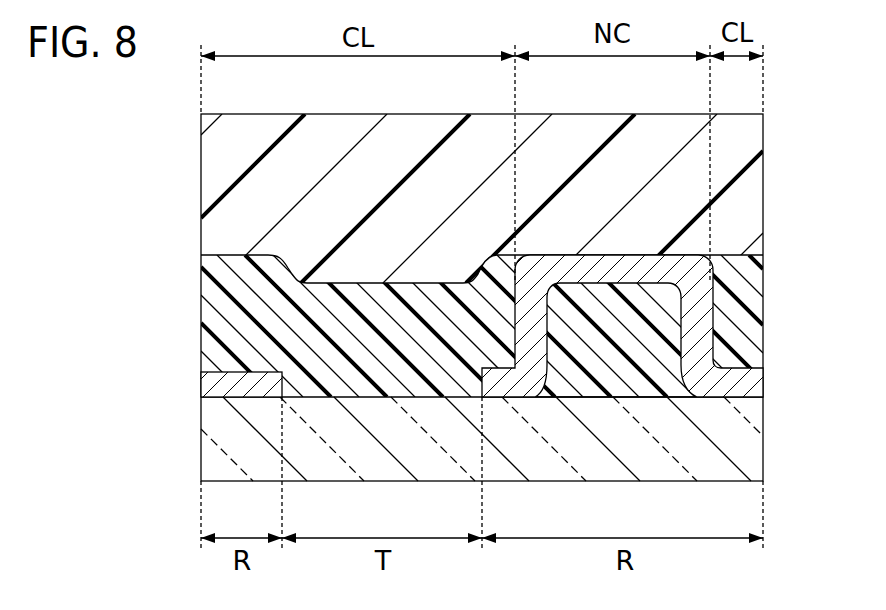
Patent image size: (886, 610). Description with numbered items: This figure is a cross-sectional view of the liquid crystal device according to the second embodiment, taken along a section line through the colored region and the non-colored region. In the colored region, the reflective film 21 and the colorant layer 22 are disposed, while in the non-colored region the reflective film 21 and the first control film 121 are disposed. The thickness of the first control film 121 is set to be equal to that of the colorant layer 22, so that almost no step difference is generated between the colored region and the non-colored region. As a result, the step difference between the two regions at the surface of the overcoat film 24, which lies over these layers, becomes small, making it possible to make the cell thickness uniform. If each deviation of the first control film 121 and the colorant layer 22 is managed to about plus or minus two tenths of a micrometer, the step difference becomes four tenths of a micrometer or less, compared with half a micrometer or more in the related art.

The overcoat film 24 is at (242, 205).
The colorant layer 22 is at (227, 310).
The reflective film 21 is at (757, 382).
The first control film 121 is at (657, 317).